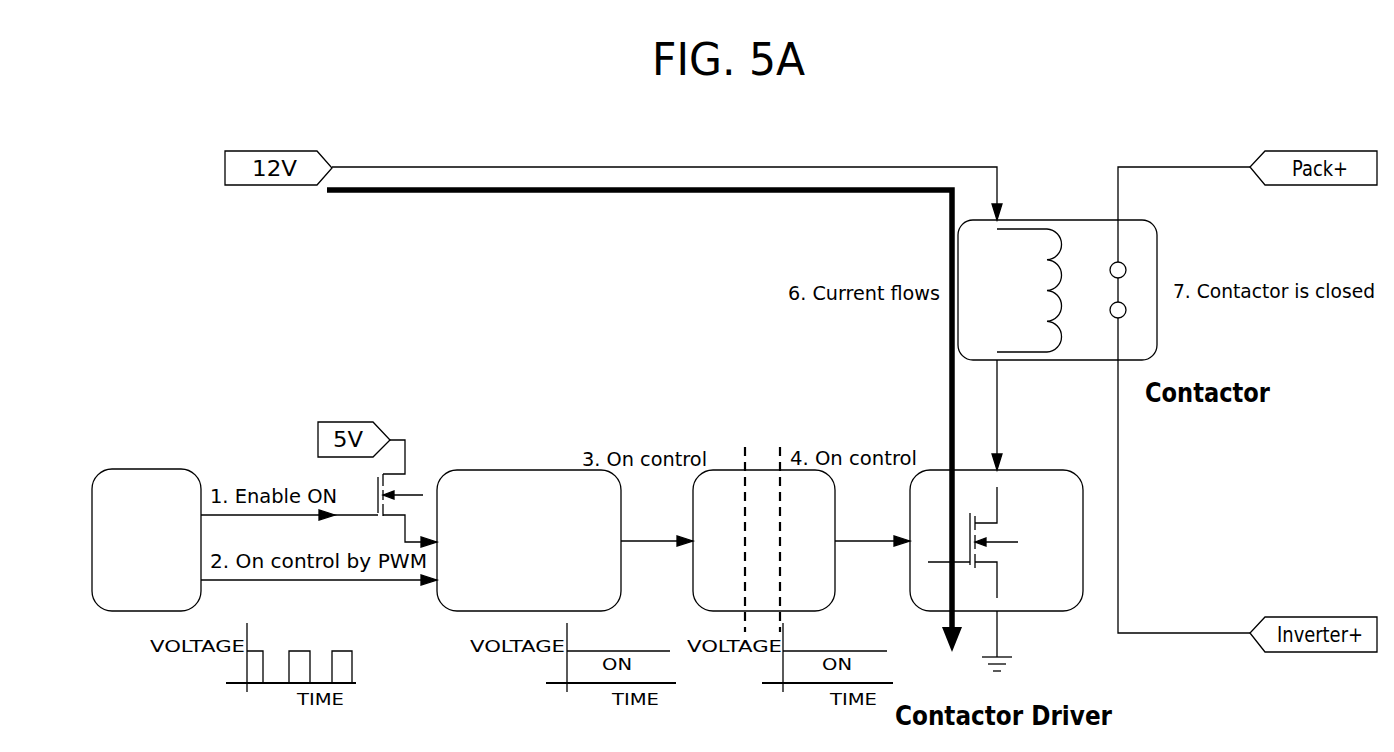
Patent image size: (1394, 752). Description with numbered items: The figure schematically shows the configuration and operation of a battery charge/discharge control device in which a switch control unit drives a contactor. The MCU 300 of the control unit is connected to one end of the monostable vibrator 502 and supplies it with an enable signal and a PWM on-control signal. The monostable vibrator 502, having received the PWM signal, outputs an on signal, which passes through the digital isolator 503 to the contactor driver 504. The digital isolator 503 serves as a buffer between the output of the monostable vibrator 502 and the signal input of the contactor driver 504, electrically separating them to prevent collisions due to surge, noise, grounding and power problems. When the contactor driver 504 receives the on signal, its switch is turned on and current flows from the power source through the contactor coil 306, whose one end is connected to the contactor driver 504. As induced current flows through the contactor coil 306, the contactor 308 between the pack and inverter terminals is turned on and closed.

The MCU 300 is at (145, 469).
The monostable vibrator 502 is at (533, 470).
The digital isolator 503 is at (713, 470).
The contactor driver 504 is at (940, 470).
The contactor coil 306 is at (1028, 360).
The contactor 308 is at (1126, 268).